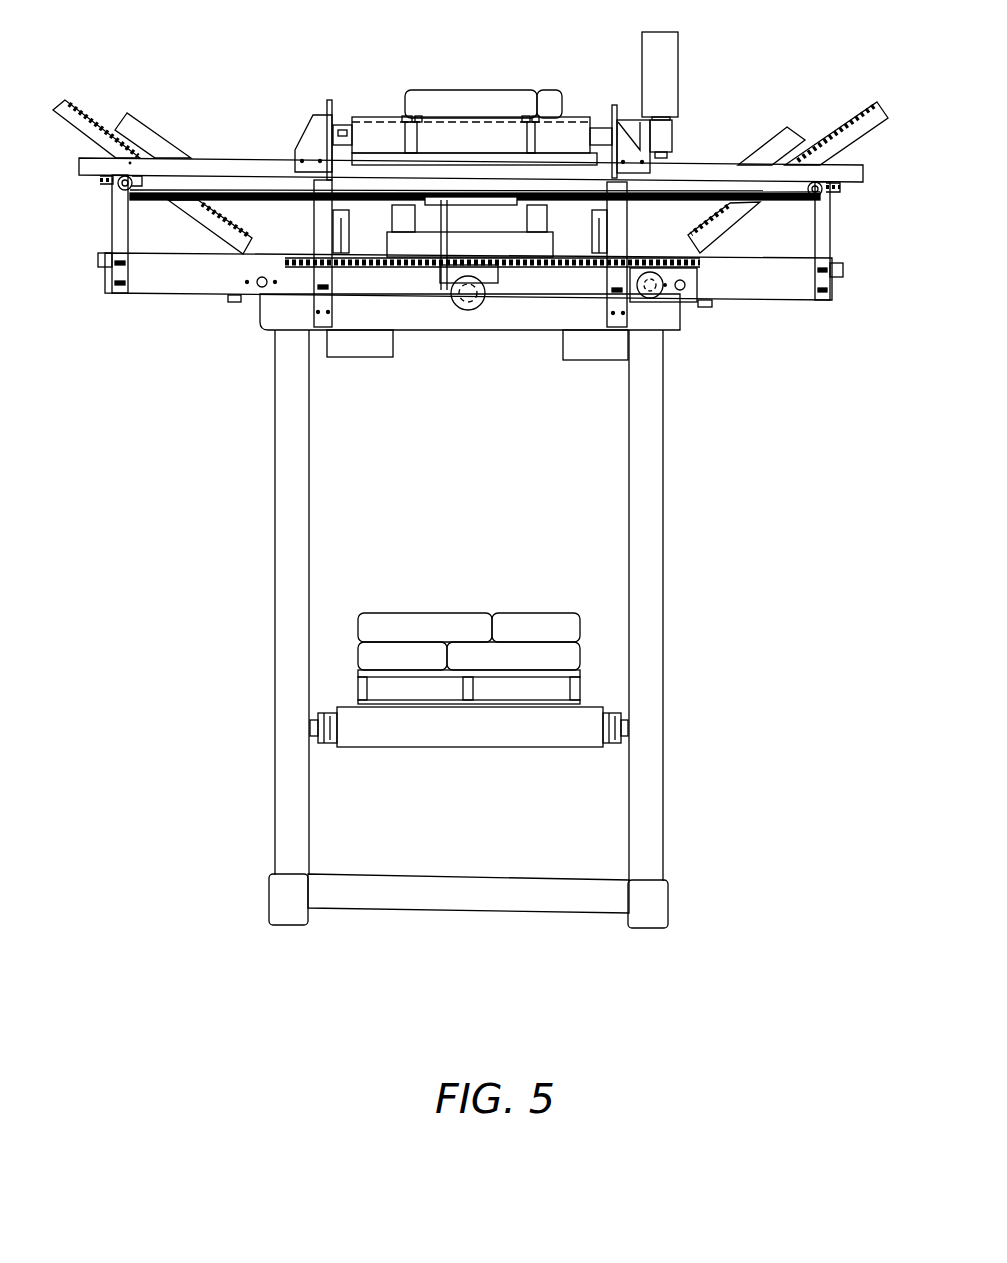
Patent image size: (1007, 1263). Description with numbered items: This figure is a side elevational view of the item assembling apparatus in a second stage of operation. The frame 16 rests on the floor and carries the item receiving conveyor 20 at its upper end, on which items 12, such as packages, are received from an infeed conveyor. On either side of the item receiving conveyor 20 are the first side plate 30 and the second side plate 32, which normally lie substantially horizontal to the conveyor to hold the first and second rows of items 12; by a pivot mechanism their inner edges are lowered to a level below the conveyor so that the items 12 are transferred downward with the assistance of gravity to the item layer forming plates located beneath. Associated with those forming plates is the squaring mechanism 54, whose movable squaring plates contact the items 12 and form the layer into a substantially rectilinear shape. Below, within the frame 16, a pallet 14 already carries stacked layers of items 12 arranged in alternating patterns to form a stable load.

The items 12 is at (460, 97).
The pallet 14 is at (470, 700).
The frame 16 is at (662, 336).
The item receiving conveyor 20 is at (402, 116).
The first side plate 30 is at (75, 123).
The second side plate 32 is at (788, 177).
The squaring mechanism 54 is at (398, 238).